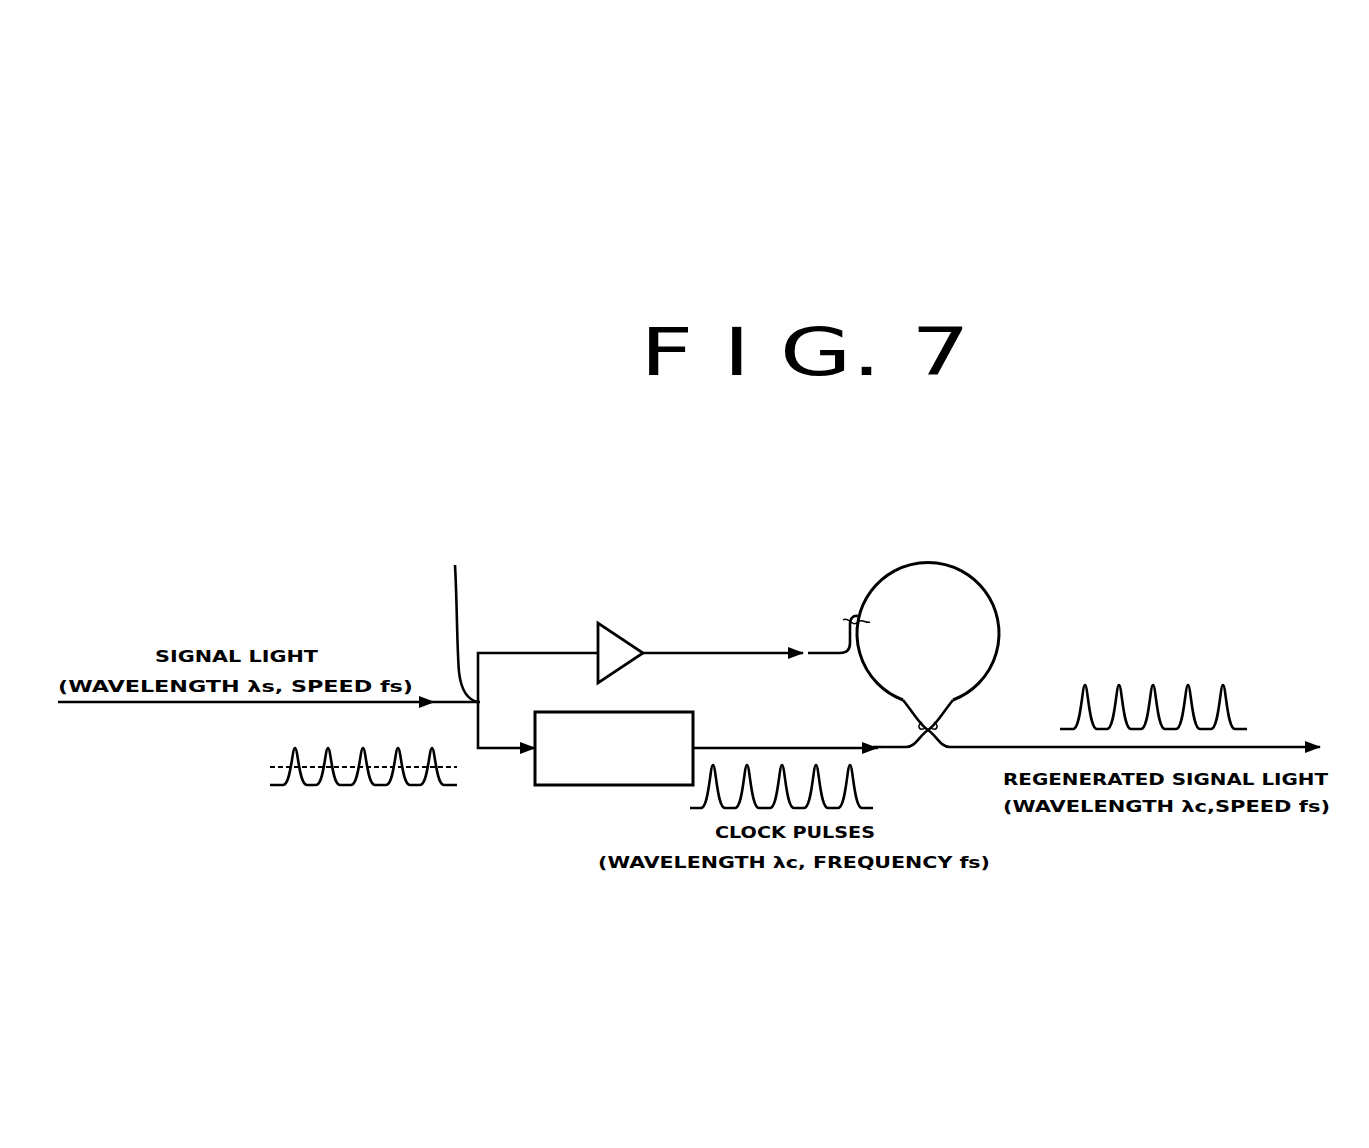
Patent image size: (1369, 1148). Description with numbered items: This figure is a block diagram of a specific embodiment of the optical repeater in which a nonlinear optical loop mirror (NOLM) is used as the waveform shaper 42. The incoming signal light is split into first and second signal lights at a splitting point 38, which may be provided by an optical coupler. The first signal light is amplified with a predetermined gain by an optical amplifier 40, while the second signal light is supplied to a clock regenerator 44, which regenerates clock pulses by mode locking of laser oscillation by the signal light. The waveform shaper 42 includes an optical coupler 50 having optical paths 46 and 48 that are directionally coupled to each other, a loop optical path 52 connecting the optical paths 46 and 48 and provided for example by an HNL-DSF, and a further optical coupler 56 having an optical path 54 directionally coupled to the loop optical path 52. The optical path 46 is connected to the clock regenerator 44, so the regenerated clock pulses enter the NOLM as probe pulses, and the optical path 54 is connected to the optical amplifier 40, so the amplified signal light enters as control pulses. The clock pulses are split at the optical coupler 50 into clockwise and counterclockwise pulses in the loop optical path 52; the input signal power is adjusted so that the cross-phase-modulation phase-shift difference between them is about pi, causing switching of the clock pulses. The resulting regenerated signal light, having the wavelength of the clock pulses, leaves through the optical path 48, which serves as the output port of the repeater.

The splitting point 38 is at (459, 615).
The optical amplifier 40 is at (618, 634).
The waveform shaper 42 is at (1058, 655).
The clock regenerator 44 is at (622, 785).
The optical path 46 is at (912, 750).
The optical path 48 is at (945, 750).
The optical coupler 50 is at (920, 723).
The loop optical path 52 is at (1000, 618).
The optical path 54 is at (846, 624).
The optical coupler 56 is at (856, 626).